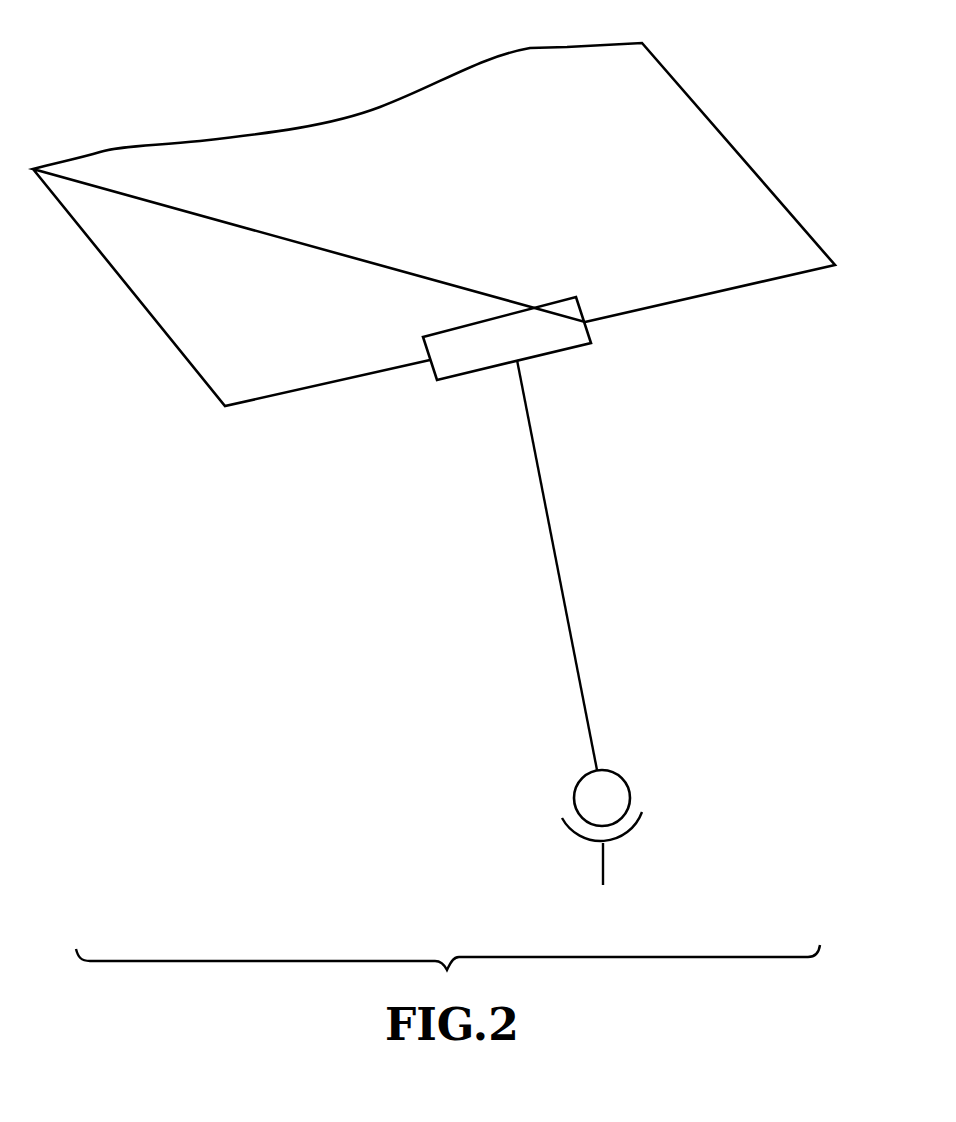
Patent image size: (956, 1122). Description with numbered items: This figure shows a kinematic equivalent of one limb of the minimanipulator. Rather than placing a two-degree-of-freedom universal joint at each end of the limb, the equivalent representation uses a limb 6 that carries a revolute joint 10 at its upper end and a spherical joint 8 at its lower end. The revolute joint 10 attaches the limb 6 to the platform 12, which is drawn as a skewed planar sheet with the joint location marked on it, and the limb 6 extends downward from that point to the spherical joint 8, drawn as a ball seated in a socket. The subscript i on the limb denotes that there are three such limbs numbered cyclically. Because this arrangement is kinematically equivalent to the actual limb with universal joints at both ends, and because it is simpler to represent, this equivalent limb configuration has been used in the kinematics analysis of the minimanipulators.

The platform 12 is at (425, 105).
The revolute joint 10 is at (557, 361).
The limb 6 is at (553, 563).
The spherical joint 8 is at (637, 789).